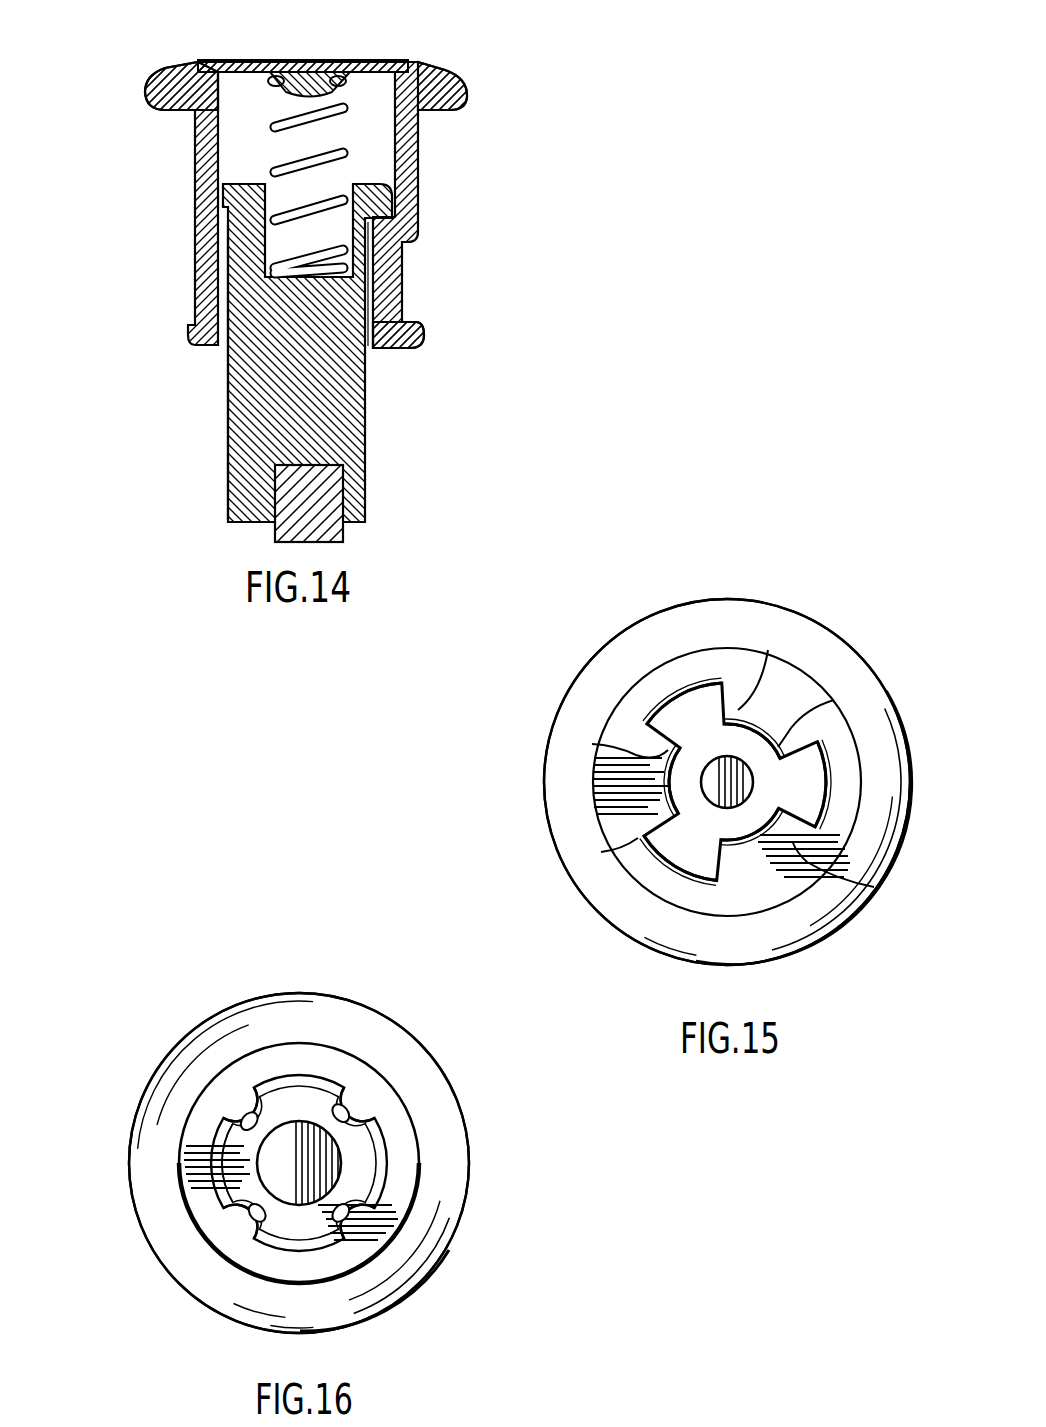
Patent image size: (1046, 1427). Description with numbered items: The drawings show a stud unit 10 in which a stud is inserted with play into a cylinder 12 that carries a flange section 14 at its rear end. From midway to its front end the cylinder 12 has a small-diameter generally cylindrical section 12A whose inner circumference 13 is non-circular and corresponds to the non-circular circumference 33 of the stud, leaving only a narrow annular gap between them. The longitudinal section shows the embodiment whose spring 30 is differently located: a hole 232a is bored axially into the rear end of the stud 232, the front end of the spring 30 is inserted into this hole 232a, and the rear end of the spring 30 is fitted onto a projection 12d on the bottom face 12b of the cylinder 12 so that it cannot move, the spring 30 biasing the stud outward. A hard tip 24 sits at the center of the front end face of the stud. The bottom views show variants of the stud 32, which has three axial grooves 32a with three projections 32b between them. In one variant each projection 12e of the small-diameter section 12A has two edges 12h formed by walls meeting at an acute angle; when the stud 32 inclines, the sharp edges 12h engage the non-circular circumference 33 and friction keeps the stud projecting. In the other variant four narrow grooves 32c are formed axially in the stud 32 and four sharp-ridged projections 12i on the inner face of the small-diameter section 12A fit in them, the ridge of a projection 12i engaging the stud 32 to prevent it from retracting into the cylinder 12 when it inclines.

In FIG. 15, the stud unit 10 is at (864, 645).
In FIG. 16, the stud unit 10 is at (416, 1016).
In FIG. 14, the cylinder 12 is at (422, 184).
In FIG. 15, the cylinder 12 is at (594, 782).
In FIG. 16, the small-diameter generally cylindrical section 12A is at (419, 1189).
In FIG. 14, the bottom face 12b is at (341, 68).
In FIG. 14, the spring retaining boss 12d is at (298, 76).
In FIG. 15, the projection 12e is at (890, 896).
In FIG. 15, the edges 12h is at (667, 737).
In FIG. 16, the projections 12i is at (247, 1115).
In FIG. 14, the inner circumference 13 is at (368, 303).
In FIG. 15, the inner circumference 13 is at (787, 778).
In FIG. 16, the inner circumference 13 is at (317, 1250).
In FIG. 14, the flange section 14 is at (447, 86).
In FIG. 15, the flange section 14 is at (559, 700).
In FIG. 14, the hard tip 24 is at (346, 536).
In FIG. 15, the hard tip 24 is at (714, 777).
In FIG. 16, the hard tip 24 is at (301, 1131).
In FIG. 14, the spring 30 is at (321, 152).
In FIG. 15, the stud 32 is at (655, 848).
In FIG. 16, the stud 32 is at (369, 1165).
In FIG. 15, the grooves 32a is at (716, 846).
In FIG. 15, the projections 32b is at (694, 702).
In FIG. 16, the narrow grooves 32c is at (355, 1103).
In FIG. 14, the non-circular circumference 33 is at (228, 437).
In FIG. 15, the non-circular circumference 33 is at (638, 784).
In FIG. 16, the non-circular circumference 33 is at (212, 1172).
In FIG. 14, the stud 232 is at (358, 428).
In FIG. 14, the hole 232a is at (372, 249).